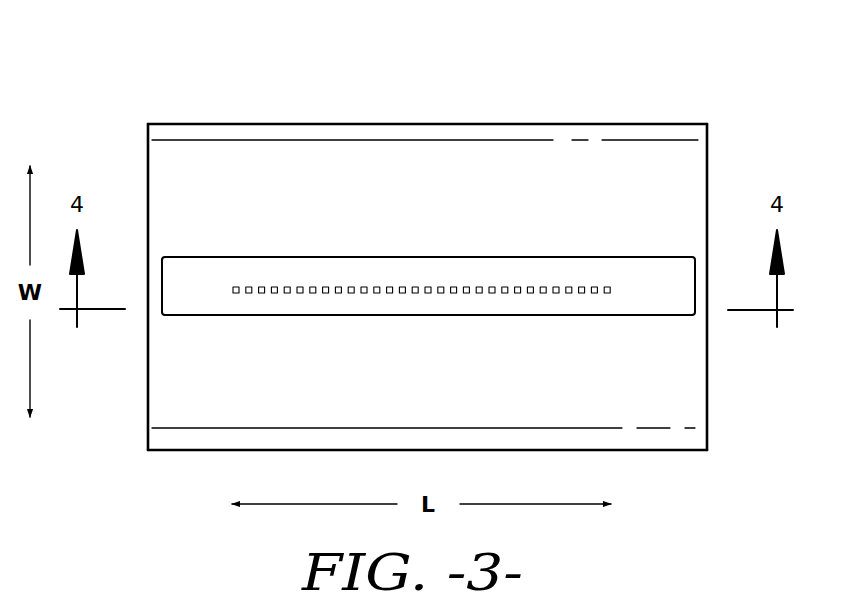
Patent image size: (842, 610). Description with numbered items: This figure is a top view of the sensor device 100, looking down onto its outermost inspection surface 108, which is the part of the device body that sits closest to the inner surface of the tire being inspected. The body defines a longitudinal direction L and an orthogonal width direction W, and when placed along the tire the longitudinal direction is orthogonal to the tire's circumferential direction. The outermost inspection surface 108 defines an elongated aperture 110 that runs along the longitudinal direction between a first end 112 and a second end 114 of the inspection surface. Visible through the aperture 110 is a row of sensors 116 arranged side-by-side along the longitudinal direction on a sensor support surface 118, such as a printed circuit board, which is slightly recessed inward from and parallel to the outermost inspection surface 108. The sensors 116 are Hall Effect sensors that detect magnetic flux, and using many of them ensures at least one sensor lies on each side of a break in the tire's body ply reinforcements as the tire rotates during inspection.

The sensor device 100 is at (641, 80).
The outermost inspection surface 108 is at (367, 172).
The aperture 110 is at (468, 257).
The first end 112 is at (170, 163).
The second end 114 is at (662, 160).
The sensors 116 is at (237, 286).
The sensor support surface 118 is at (192, 283).